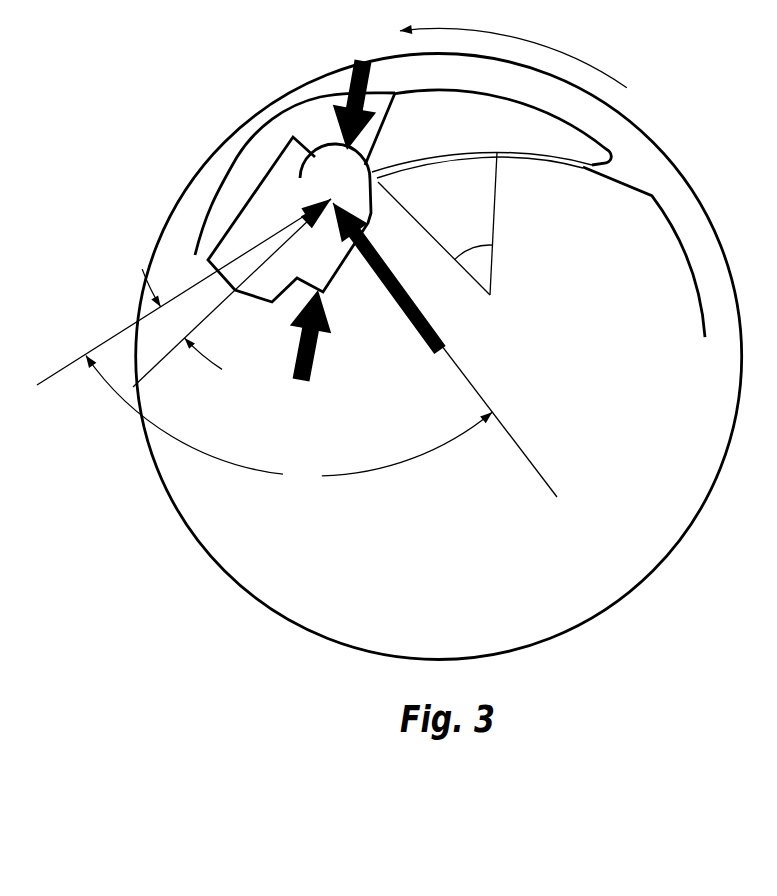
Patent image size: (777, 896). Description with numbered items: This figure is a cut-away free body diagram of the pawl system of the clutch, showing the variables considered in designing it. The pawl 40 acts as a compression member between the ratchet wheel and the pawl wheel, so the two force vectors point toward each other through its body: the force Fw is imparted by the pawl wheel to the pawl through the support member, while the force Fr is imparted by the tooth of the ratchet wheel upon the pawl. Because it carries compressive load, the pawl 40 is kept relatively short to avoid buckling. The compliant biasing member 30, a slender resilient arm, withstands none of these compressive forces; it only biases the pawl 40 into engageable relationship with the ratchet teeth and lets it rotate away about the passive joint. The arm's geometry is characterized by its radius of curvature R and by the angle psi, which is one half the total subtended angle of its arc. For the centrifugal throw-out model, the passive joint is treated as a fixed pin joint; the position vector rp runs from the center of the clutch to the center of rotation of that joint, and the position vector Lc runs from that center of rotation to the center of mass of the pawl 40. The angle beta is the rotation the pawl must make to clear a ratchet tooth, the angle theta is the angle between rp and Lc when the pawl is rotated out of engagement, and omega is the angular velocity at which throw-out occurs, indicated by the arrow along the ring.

The compliant biasing member 30 is at (583, 167).
The pawl 40 is at (300, 178).
The pawl wheel force Fw is at (360, 83).
The ratchet tooth force Fr is at (307, 354).
The pivot position vector rp is at (430, 323).
The center of mass position vector Lc is at (309, 228).
The radius of curvature R is at (497, 192).
The angle theta is at (289, 423).
The angle beta is at (190, 329).
The angle psi is at (474, 239).
The angular velocity omega is at (513, 49).